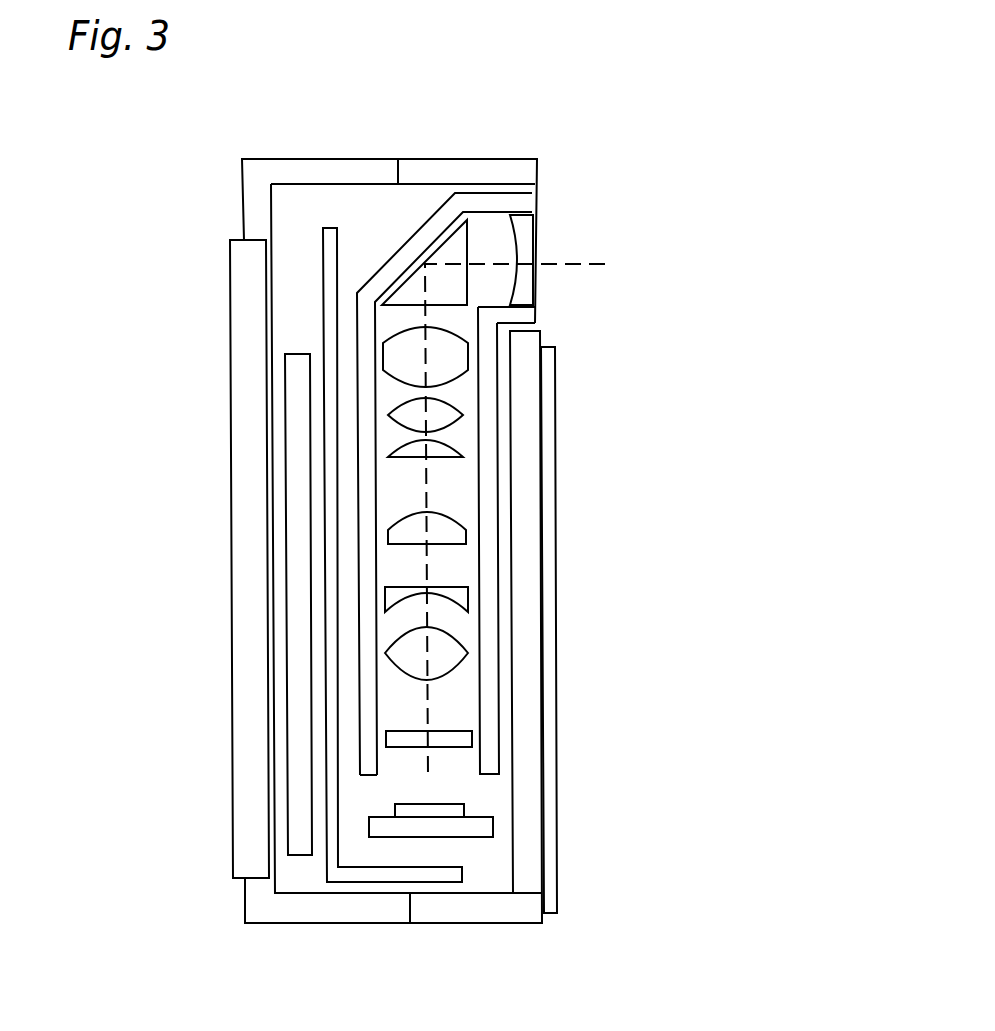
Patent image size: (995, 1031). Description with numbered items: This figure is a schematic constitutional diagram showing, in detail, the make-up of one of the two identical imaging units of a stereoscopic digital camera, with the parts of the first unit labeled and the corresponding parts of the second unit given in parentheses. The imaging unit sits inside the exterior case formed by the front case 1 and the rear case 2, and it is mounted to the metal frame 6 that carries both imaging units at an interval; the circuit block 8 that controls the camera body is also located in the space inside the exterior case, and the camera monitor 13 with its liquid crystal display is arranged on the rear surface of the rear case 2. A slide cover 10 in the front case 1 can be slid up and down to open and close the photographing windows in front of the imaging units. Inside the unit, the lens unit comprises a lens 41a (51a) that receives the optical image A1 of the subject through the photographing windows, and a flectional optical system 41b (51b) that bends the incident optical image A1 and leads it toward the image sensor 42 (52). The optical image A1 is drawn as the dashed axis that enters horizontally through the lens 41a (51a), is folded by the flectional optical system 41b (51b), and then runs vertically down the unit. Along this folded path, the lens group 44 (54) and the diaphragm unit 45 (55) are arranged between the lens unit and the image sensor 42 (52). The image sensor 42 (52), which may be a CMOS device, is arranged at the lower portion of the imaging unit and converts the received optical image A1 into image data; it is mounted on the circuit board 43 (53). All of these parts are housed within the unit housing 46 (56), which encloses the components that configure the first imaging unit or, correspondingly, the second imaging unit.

The front case 1 is at (532, 883).
The rear case 2 is at (250, 173).
The frame 6 is at (332, 398).
The circuit block 8 is at (295, 467).
The slide cover 10 is at (550, 750).
The camera monitor 13 is at (247, 533).
The lens 41a is at (625, 230).
The lens 51a is at (518, 223).
The flectional optical system 41b is at (462, 196).
The flectional optical system 51b is at (453, 252).
The image sensor 42 is at (363, 898).
The image sensor 52 is at (422, 808).
The circuit board 43 is at (444, 904).
The circuit board 53 is at (470, 828).
The lens group 44 is at (548, 503).
The lens group 54 is at (443, 452).
The diaphragm unit 45 is at (542, 709).
The diaphragm unit 55 is at (457, 735).
The unit housing 46 is at (398, 421).
The unit housing 56 is at (402, 255).
The optical image A1 is at (578, 260).